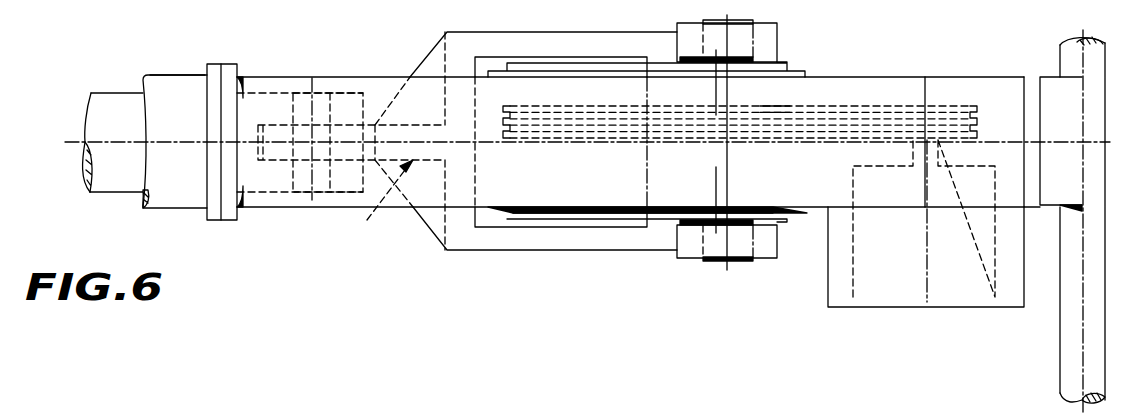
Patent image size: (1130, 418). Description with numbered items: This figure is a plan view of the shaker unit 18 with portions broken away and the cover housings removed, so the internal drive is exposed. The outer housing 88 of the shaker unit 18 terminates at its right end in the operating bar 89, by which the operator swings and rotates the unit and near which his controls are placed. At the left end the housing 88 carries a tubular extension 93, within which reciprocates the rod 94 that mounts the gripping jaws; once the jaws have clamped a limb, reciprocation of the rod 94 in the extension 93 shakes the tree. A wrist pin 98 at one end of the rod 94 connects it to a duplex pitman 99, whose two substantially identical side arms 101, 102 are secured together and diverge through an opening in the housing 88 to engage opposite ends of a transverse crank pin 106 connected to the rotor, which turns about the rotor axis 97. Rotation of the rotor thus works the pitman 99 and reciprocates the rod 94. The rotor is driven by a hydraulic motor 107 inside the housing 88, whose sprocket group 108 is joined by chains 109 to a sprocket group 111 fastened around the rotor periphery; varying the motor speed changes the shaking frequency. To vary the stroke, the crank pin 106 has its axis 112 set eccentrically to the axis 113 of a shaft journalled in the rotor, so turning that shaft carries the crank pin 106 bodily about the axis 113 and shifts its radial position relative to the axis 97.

The shaker unit 18 is at (177, 72).
The rod 94 is at (112, 98).
The tubular extension 93 is at (177, 203).
The wrist pin 98 is at (318, 97).
The outer housing 88 is at (397, 55).
The duplex pitman 99 is at (387, 206).
The side arm 102 is at (587, 14).
The side arm 101 is at (582, 249).
The rotor axis 97 is at (646, 180).
The crank pin 106 is at (737, 23).
The crank pin axis 112 is at (727, 268).
The shaft axis 113 is at (716, 87).
The sprocket group 111 is at (777, 107).
The chains 109 is at (845, 108).
The sprocket group 108 is at (970, 107).
The hydraulic motor 107 is at (953, 294).
The operating bar 89 is at (1062, 367).